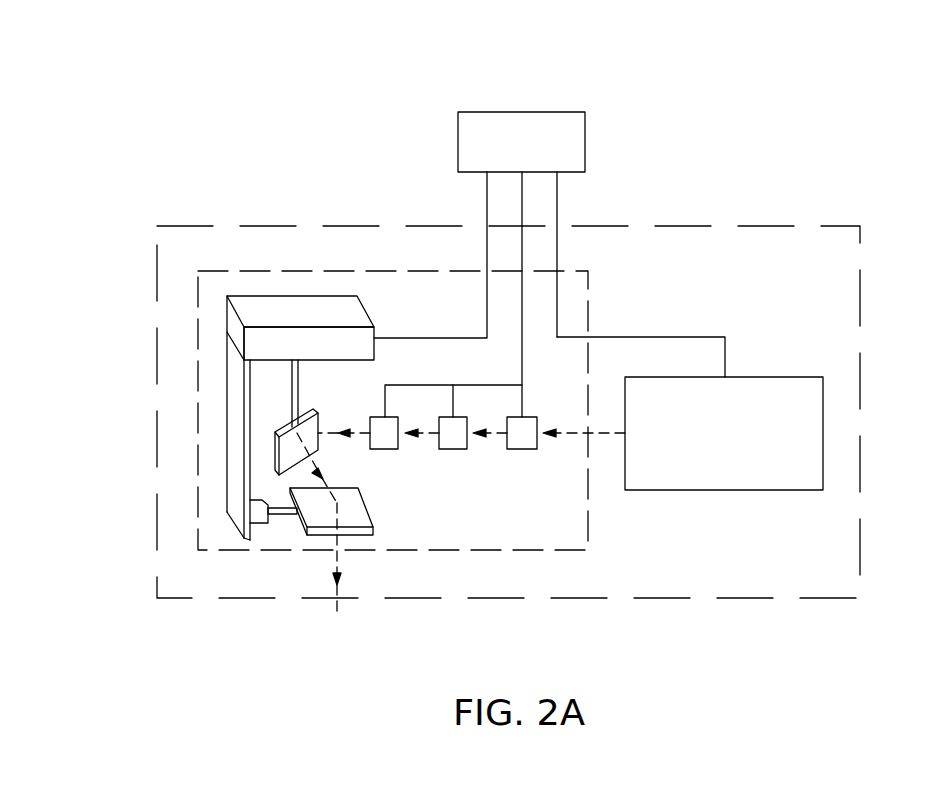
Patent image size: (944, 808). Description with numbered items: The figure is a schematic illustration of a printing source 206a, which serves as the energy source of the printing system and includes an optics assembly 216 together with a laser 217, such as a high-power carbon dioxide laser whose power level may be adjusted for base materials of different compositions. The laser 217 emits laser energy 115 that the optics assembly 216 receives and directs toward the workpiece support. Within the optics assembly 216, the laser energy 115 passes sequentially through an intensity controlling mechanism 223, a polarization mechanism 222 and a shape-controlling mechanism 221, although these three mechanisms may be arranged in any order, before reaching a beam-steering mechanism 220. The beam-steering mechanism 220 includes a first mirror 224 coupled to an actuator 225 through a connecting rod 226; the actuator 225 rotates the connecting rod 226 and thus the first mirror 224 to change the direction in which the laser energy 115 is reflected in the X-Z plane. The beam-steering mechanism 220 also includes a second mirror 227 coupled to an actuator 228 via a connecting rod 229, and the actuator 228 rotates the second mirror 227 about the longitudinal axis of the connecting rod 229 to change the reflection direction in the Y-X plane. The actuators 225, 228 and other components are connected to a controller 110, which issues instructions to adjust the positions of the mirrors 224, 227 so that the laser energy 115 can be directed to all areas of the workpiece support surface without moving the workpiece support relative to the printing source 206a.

The controller 110 is at (527, 112).
The laser energy 115 is at (598, 427).
The printing source 206a is at (665, 218).
The optics assembly 216 is at (197, 407).
The laser 217 is at (752, 447).
The beam-steering mechanism 220 is at (223, 322).
The shape-controlling mechanism 221 is at (384, 449).
The polarization mechanism 222 is at (455, 449).
The intensity controlling mechanism 223 is at (524, 449).
The first mirror 224 is at (312, 407).
The actuator 225 is at (374, 345).
The connecting rod 226 is at (291, 378).
The second mirror 227 is at (367, 505).
The actuator 228 is at (260, 523).
The connecting rod 229 is at (285, 518).